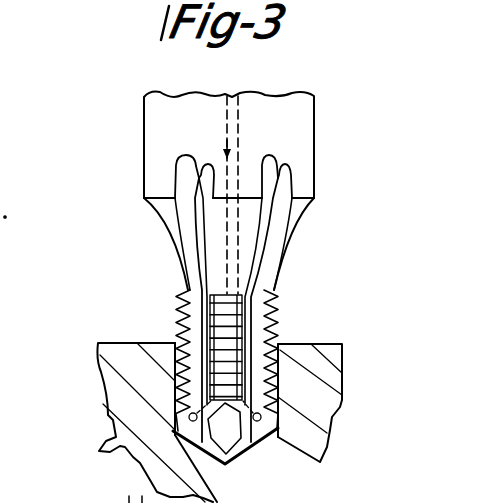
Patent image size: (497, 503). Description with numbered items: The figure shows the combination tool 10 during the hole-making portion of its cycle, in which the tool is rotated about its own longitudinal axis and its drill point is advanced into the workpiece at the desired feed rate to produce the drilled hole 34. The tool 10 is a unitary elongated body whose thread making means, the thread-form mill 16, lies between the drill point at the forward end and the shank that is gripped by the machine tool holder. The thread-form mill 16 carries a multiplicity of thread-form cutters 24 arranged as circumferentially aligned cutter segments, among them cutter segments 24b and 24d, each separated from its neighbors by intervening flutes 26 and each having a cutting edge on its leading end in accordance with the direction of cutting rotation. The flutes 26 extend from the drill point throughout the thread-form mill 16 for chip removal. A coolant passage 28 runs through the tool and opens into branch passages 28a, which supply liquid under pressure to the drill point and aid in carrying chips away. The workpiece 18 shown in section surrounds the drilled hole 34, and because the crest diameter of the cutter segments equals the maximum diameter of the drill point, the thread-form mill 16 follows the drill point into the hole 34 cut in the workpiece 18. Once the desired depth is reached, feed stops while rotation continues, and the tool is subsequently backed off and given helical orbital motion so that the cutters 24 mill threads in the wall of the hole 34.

The combination tool 10 is at (98, 221).
The thread-form mill 16 is at (283, 335).
The wall of combustion chamber 18 is at (142, 422).
The thread-form cutters 24 is at (176, 343).
The cutter segment 24b is at (174, 367).
The cutter segment 24d is at (279, 392).
The flutes 26 is at (206, 270).
The coolant passage 28 is at (241, 143).
The branch passages 28a is at (260, 413).
The drilled hole 34 is at (176, 404).